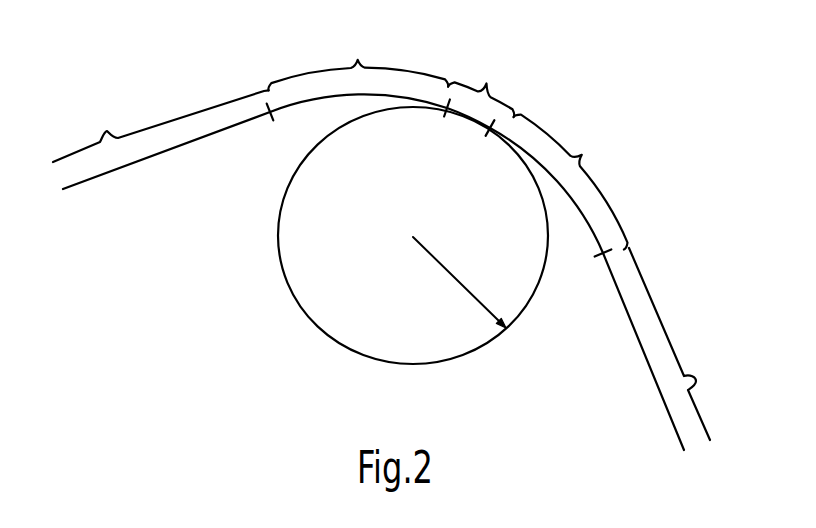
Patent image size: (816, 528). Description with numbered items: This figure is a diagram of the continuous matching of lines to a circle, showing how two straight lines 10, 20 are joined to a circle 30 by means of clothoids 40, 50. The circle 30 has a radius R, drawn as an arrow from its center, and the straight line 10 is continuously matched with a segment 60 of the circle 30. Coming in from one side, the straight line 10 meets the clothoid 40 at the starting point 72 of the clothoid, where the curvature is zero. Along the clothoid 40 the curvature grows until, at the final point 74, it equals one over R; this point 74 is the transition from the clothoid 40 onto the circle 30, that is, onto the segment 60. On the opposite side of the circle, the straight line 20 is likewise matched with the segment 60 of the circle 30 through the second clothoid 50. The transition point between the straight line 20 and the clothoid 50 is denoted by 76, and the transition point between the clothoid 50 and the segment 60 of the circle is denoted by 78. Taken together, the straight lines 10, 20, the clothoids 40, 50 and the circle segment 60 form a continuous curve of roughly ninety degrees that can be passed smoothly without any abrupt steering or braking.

The straight line 10 is at (161, 139).
The straight line 20 is at (665, 349).
The circle 30 is at (337, 345).
The clothoid 40 is at (358, 71).
The second clothoid 50 is at (559, 184).
The segment of the circle 60 is at (480, 92).
The starting point of the clothoid 72 is at (277, 131).
The final point of the clothoid 74 is at (441, 97).
The transition point 76 is at (590, 261).
The transition point 78 is at (505, 119).
The radius R is at (459, 276).